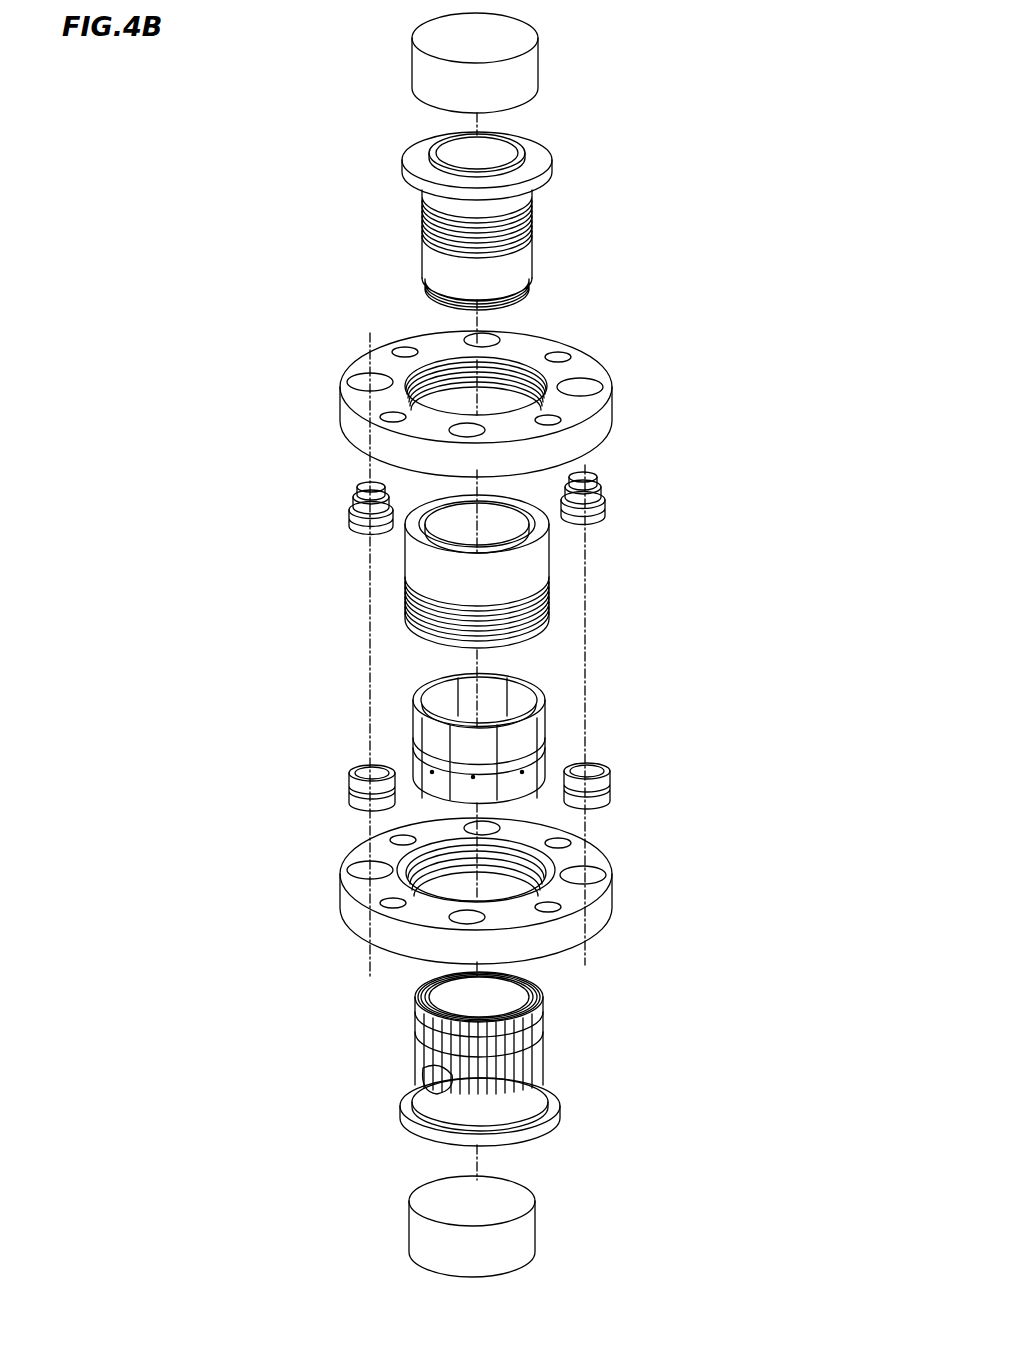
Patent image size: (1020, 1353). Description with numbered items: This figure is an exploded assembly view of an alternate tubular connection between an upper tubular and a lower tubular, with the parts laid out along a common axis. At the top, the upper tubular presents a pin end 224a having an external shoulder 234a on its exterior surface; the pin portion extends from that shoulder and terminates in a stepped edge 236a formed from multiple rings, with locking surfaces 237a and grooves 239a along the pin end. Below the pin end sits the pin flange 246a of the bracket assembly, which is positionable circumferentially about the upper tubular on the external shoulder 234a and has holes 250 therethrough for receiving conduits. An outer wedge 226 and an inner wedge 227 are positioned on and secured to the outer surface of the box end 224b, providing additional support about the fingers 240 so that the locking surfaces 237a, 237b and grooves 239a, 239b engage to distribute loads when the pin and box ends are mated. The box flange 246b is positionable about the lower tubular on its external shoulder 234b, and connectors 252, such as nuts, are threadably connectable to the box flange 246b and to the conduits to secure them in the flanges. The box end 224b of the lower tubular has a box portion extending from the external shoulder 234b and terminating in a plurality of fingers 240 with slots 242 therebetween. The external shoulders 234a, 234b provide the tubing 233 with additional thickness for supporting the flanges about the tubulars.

The tubing 233 is at (408, 68).
The pin end 224a is at (483, 221).
The external shoulder 234a is at (551, 173).
The grooves 239a is at (535, 212).
The locking surfaces 237a is at (518, 247).
The stepped edge 236a is at (530, 298).
The pin flange 246a is at (388, 404).
The holes 250 is at (381, 411).
The connectors 252 is at (347, 511).
The outer wedge 226 is at (403, 563).
The inner wedge 227 is at (412, 713).
The box flange 246b is at (333, 904).
The box end 224b is at (478, 1059).
The grooves 239b is at (440, 987).
The locking surfaces 237b is at (520, 987).
The fingers 240 is at (447, 1047).
The slots 242 is at (404, 1093).
The external shoulder 234b is at (557, 1105).